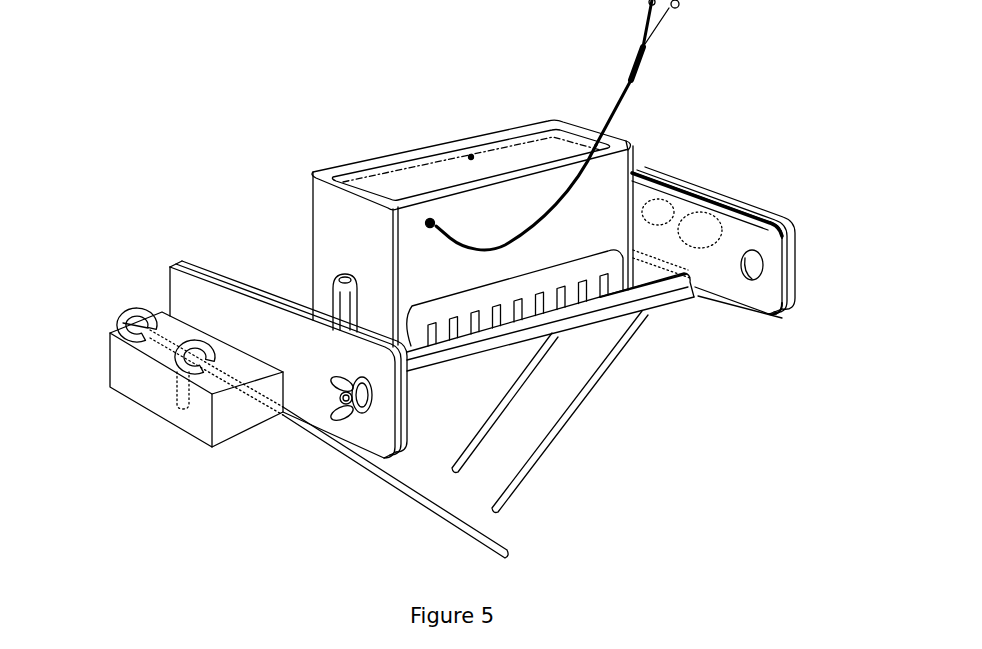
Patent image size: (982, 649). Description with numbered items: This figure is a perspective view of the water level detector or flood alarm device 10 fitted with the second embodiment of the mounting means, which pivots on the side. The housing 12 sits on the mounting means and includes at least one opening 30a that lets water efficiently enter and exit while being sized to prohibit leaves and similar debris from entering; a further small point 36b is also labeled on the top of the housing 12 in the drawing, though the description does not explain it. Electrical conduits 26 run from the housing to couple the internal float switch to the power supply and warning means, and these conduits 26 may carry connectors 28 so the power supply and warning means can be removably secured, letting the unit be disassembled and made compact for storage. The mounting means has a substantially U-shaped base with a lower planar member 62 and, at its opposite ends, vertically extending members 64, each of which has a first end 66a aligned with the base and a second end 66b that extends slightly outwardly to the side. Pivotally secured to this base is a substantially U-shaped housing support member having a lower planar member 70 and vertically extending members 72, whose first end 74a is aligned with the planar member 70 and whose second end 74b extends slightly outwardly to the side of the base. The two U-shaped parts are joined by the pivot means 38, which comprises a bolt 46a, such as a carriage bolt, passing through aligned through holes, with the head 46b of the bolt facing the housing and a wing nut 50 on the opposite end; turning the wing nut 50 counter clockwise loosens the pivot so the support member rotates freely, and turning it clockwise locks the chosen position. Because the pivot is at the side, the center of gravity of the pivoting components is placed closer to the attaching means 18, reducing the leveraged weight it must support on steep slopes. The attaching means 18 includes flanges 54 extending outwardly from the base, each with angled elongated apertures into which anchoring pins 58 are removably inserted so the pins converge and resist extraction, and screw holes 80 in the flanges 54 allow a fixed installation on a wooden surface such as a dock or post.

The water level detector or flood alarm device 10 is at (183, 160).
The housing 12 is at (502, 150).
The attaching means 18 is at (104, 318).
The electrical conduits 26 is at (627, 88).
The connectors 28 is at (683, 3).
The opening 30a is at (433, 368).
The contact point 36b is at (470, 157).
The pivot means 38 is at (357, 427).
The bolt 46a is at (330, 405).
The head 46b is at (753, 270).
The wing nut 50 is at (337, 380).
The flanges 54 is at (152, 368).
The anchoring pin 58 is at (556, 433).
The lower planar member 62 is at (673, 297).
The vertically extending members 64 is at (773, 220).
The first end 66a is at (180, 267).
The second end 66b is at (793, 267).
The lower planar member 70 is at (490, 337).
The vertically extending members 72 is at (740, 220).
The first end 74a is at (214, 263).
The second end 74b is at (770, 295).
The screw holes 80 is at (177, 392).